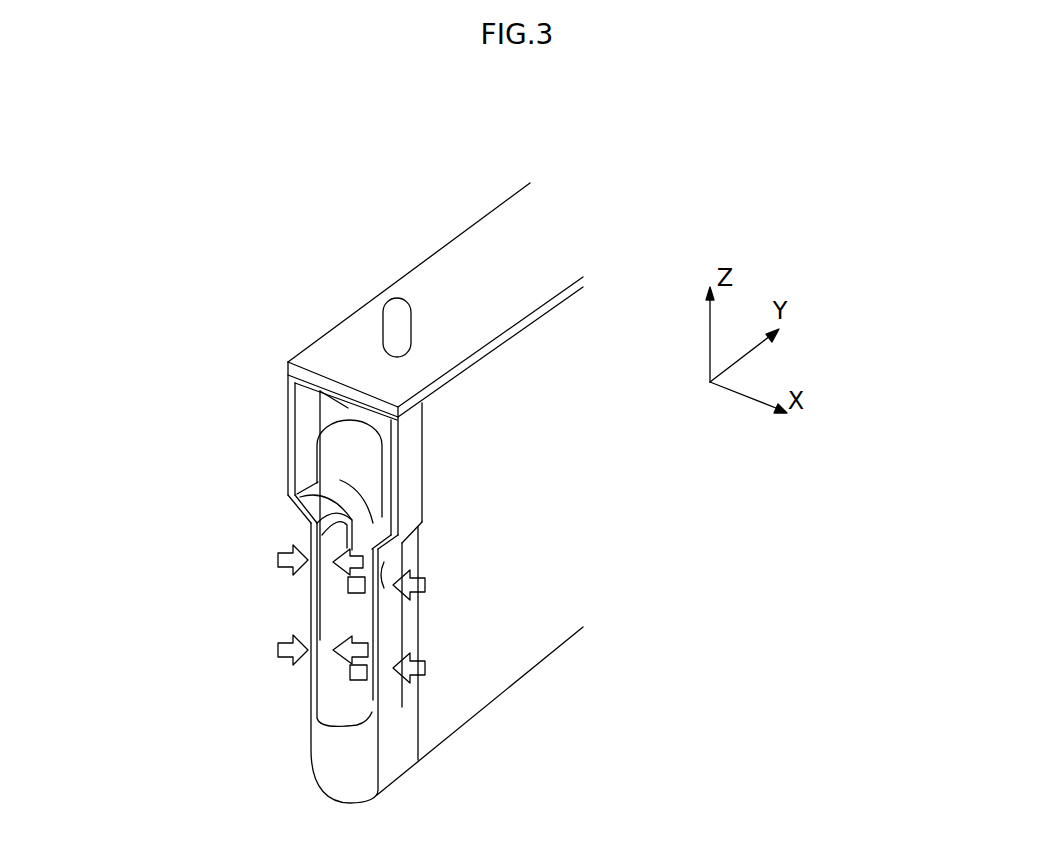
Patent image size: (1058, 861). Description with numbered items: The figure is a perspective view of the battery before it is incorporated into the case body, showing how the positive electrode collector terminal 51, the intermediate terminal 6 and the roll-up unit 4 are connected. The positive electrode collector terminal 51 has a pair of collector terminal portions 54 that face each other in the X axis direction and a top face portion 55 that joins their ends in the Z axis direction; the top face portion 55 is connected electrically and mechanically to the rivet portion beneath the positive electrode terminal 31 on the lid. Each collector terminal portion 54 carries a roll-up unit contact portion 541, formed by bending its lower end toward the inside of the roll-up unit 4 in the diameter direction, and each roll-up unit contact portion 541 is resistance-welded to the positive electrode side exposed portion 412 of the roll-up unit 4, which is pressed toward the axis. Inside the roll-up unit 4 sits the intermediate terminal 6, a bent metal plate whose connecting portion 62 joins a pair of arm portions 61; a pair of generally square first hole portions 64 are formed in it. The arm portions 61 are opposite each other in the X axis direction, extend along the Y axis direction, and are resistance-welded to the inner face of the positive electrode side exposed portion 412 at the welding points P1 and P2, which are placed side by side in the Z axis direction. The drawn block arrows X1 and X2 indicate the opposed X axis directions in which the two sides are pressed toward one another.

The positive electrode terminal 31 is at (390, 294).
The roll-up unit 4 is at (447, 631).
The positive electrode side exposed portion 412 is at (402, 763).
The positive electrode collector terminal 51 is at (316, 486).
The collector terminal portion 54 is at (288, 440).
The roll-up unit contact portion 541 is at (310, 625).
The top face portion 55 is at (291, 405).
The intermediate terminal 6 is at (319, 573).
The arm portion 61 is at (313, 527).
The connecting portion 62 is at (290, 497).
The first hole portion 64 is at (398, 525).
The direction X1 is at (284, 546).
The direction X2 is at (433, 606).
The welding point P1 is at (315, 590).
The welding point P2 is at (300, 676).